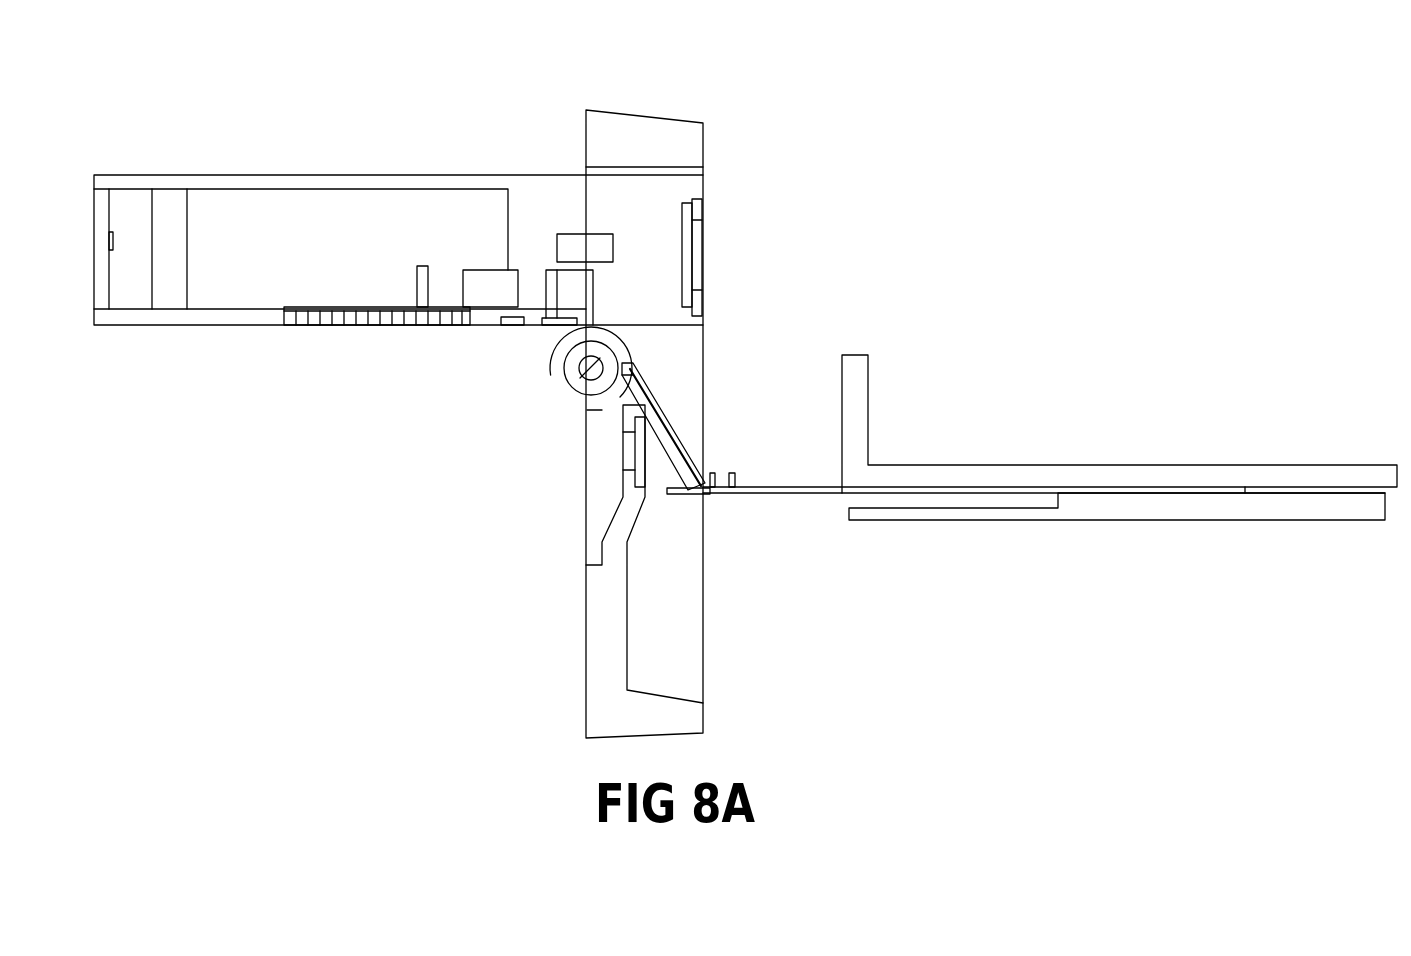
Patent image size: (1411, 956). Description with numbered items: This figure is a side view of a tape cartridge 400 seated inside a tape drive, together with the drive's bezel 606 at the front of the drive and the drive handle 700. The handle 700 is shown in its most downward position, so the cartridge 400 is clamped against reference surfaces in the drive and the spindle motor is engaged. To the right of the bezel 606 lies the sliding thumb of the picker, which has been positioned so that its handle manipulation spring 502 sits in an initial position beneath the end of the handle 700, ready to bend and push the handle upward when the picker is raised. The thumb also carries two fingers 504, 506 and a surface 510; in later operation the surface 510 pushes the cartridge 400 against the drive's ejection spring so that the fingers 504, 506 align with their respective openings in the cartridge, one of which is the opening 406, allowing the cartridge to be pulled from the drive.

The tape cartridge 400 is at (300, 173).
The opening 406 is at (568, 328).
The bezel 606 is at (642, 112).
The handle 700 is at (667, 410).
The handle manipulation spring 502 is at (677, 495).
The finger 506 is at (710, 473).
The finger 504 is at (737, 473).
The surface 510 is at (842, 378).